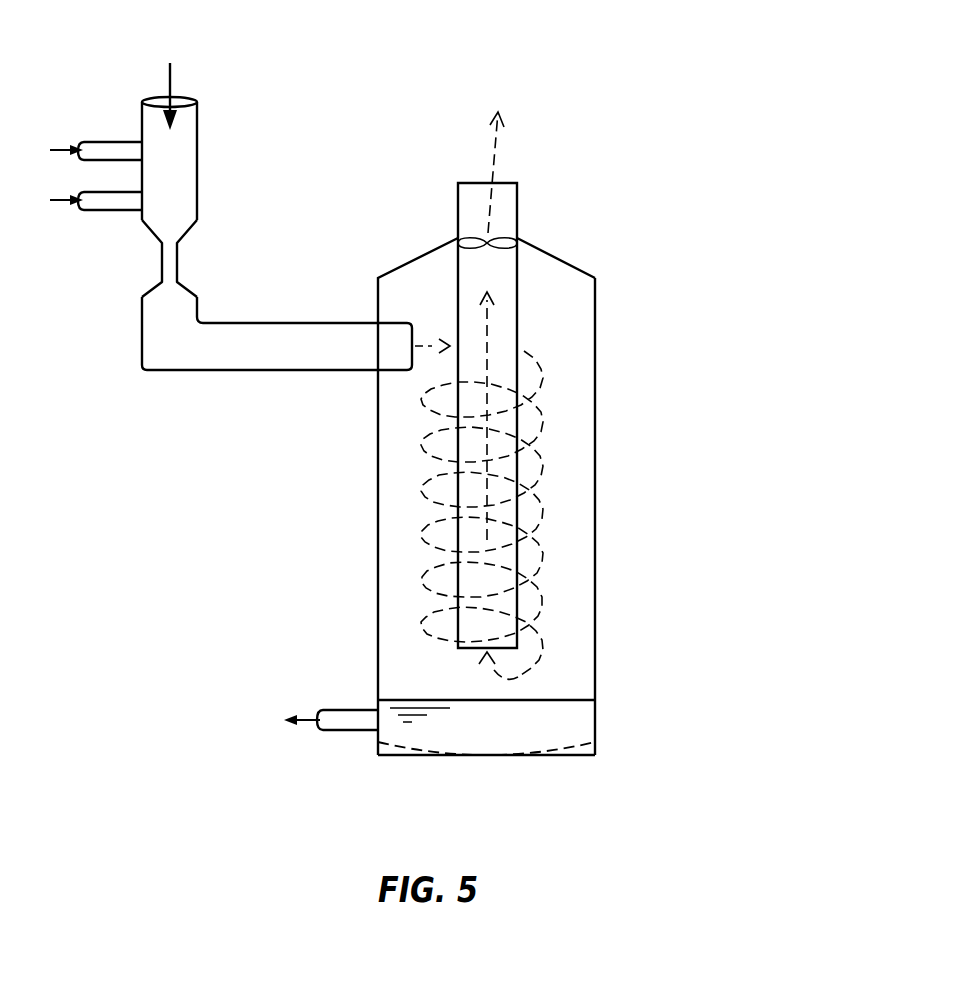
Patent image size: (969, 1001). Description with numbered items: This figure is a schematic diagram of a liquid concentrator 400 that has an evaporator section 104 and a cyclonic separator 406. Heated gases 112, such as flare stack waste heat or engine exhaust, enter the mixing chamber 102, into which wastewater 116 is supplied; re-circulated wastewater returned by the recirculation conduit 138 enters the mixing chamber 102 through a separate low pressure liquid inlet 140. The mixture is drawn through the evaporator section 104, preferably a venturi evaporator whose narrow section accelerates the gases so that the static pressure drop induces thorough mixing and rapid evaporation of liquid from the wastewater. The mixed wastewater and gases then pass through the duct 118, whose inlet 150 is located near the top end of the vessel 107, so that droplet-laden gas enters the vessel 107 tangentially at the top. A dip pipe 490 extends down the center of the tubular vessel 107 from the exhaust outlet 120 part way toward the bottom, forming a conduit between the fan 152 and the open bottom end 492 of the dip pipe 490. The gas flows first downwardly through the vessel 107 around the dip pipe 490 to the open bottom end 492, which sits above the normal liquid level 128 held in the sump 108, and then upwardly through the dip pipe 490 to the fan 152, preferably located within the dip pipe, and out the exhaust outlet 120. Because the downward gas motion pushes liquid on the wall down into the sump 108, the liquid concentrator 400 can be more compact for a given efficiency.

The liquid concentrator 400 is at (580, 54).
The mixing chamber 102 is at (188, 145).
The heated gases 112 is at (168, 77).
The wastewater 116 is at (50, 150).
The liquid inlet 140 is at (137, 208).
The evaporator section 104 is at (177, 258).
The duct 118 is at (212, 372).
The inlet 150 is at (407, 348).
The cyclonic separator 406 is at (611, 305).
The vessel 107 is at (596, 443).
The exhaust outlet 120 is at (518, 193).
The fan 152 is at (500, 242).
The dip pipe 490 is at (505, 524).
The open bottom end 492 is at (505, 649).
The liquid level 128 is at (493, 722).
The sump 108 is at (575, 745).
The recirculation conduit 138 is at (345, 731).